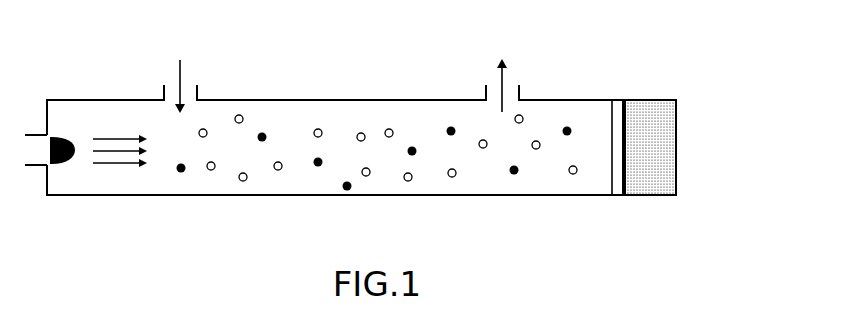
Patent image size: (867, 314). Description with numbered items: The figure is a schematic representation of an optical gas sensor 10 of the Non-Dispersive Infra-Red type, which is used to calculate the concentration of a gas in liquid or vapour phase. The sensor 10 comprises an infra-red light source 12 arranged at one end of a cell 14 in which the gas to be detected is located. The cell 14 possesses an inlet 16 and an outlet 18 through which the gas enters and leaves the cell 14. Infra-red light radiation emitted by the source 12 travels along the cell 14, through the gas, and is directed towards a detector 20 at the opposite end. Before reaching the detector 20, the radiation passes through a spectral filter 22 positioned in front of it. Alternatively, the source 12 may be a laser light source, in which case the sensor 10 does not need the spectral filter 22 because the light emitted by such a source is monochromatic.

The sensor 10 is at (663, 60).
The infra-red light source 12 is at (63, 152).
The cell 14 is at (375, 185).
The inlet 16 is at (188, 90).
The outlet 18 is at (510, 90).
The detector 20 is at (652, 187).
The spectral filter 22 is at (617, 187).